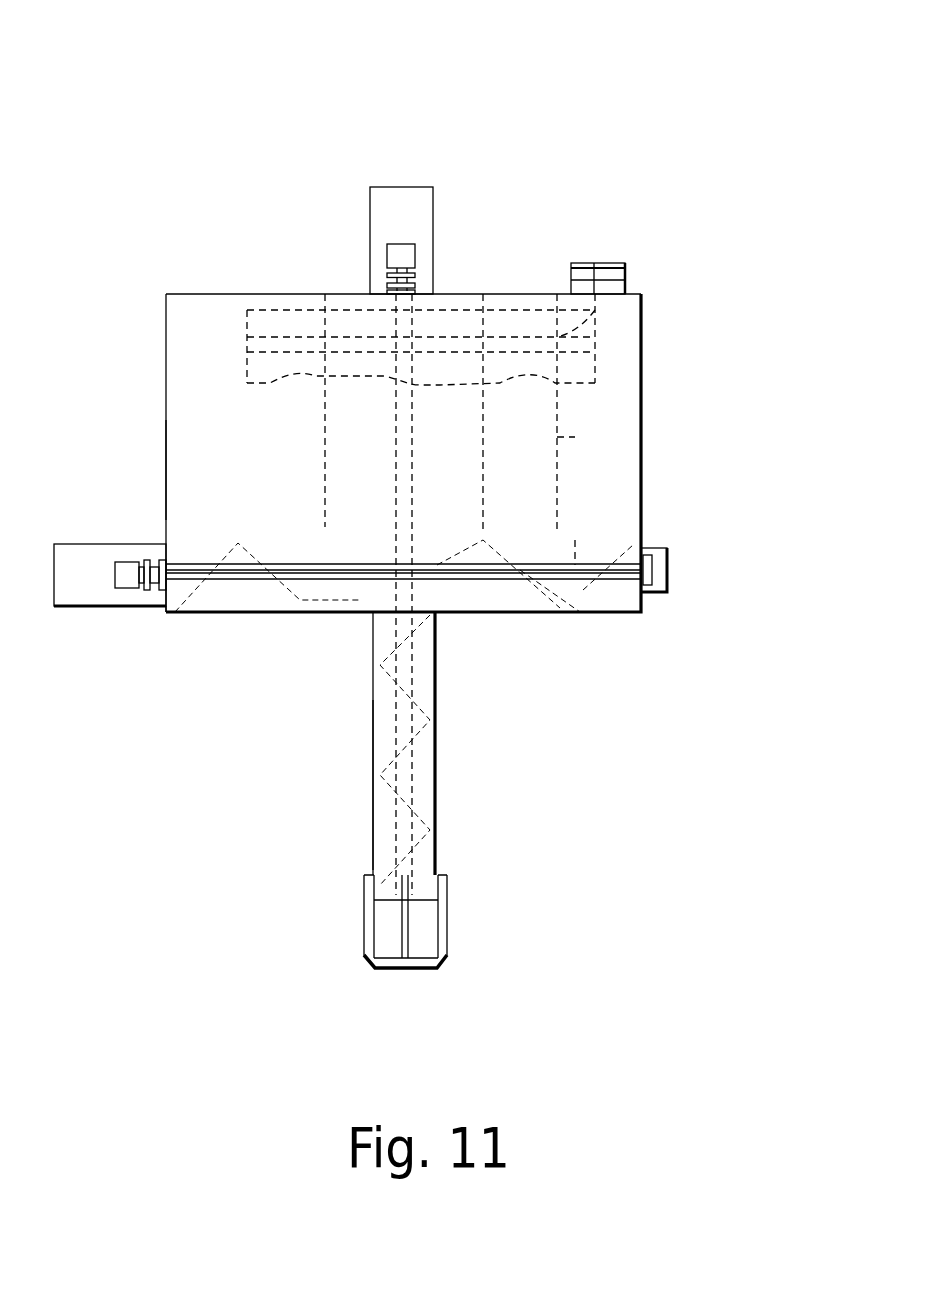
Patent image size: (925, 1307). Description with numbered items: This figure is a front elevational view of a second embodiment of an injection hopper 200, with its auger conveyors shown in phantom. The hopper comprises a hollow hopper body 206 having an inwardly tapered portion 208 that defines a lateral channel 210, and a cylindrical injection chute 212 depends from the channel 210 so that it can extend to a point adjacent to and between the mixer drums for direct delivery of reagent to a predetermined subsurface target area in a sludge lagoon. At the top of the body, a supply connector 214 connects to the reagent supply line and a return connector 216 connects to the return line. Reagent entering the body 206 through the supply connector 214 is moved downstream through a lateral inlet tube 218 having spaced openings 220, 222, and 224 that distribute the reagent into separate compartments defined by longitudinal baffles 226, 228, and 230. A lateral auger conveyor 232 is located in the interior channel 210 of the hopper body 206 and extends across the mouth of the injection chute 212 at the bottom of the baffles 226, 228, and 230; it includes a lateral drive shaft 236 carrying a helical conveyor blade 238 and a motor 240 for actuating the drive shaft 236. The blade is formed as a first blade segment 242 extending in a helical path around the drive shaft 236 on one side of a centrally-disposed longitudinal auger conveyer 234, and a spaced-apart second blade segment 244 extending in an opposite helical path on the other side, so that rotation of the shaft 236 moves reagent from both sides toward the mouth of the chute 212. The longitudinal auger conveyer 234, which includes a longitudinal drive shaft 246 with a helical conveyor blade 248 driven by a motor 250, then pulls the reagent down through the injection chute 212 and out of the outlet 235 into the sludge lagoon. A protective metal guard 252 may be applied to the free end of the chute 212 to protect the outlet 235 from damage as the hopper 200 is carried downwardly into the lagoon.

The injection hopper 200 is at (140, 198).
The hopper body 206 is at (641, 400).
The inwardly tapered portion 208 is at (166, 467).
The lateral channel 210 is at (166, 612).
The injection chute 212 is at (374, 848).
The supply connector 214 is at (578, 263).
The return connector 216 is at (612, 263).
The lateral inlet tube 218 is at (322, 452).
The opening 220 is at (283, 372).
The opening 222 is at (387, 375).
The opening 224 is at (523, 372).
The longitudinal baffle 226 is at (247, 366).
The longitudinal baffle 228 is at (483, 445).
The longitudinal baffle 230 is at (560, 437).
The lateral auger conveyor 232 is at (234, 612).
The longitudinal auger conveyer 234 is at (450, 692).
The outlet 235 is at (388, 900).
The lateral drive shaft 236 is at (575, 545).
The helical conveyor blade 238 is at (362, 612).
The motor 240 is at (78, 565).
The first blade segment 242 is at (238, 550).
The second blade segment 244 is at (641, 599).
The longitudinal drive shaft 246 is at (420, 805).
The helical conveyor blade 248 is at (420, 745).
The motor 250 is at (393, 198).
The protective metal guard 252 is at (447, 912).